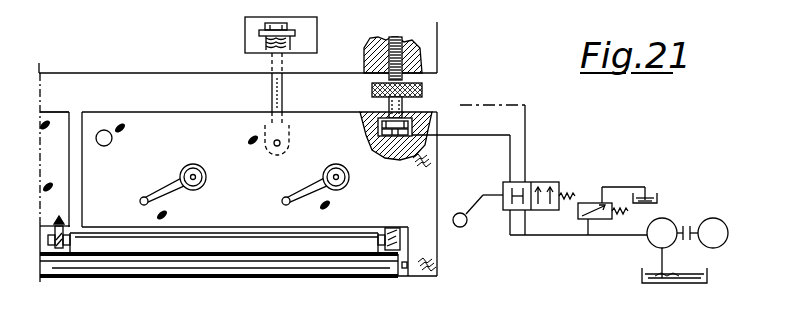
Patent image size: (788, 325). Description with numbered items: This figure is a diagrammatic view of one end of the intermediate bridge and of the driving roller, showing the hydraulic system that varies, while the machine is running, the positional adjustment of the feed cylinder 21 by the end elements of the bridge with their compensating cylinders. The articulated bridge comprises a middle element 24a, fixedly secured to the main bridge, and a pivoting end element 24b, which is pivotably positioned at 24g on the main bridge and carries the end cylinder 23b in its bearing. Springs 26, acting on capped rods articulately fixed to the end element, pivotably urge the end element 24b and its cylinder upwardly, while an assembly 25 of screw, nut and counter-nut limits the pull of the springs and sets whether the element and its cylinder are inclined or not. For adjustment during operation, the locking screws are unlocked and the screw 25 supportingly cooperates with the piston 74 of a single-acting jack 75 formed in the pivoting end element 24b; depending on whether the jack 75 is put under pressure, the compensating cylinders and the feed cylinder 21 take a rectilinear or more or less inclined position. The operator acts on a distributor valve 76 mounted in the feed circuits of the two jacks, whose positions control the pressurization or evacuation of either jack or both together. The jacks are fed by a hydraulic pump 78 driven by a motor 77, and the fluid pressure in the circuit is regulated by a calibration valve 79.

The feed cylinder 21 is at (63, 265).
The end cylinder 23b is at (109, 245).
The middle element 24a is at (60, 122).
The end element 24b is at (250, 210).
The pivot 24g is at (104, 130).
The screw, nut and counter-nut assembly 25 is at (420, 72).
The spring 26 is at (262, 44).
The piston 74 is at (422, 98).
The single-acting jack 75 is at (408, 140).
The distributor valve 76 is at (510, 200).
The motor 77 is at (716, 222).
The hydraulic pump 78 is at (661, 222).
The calibration valve 79 is at (588, 202).